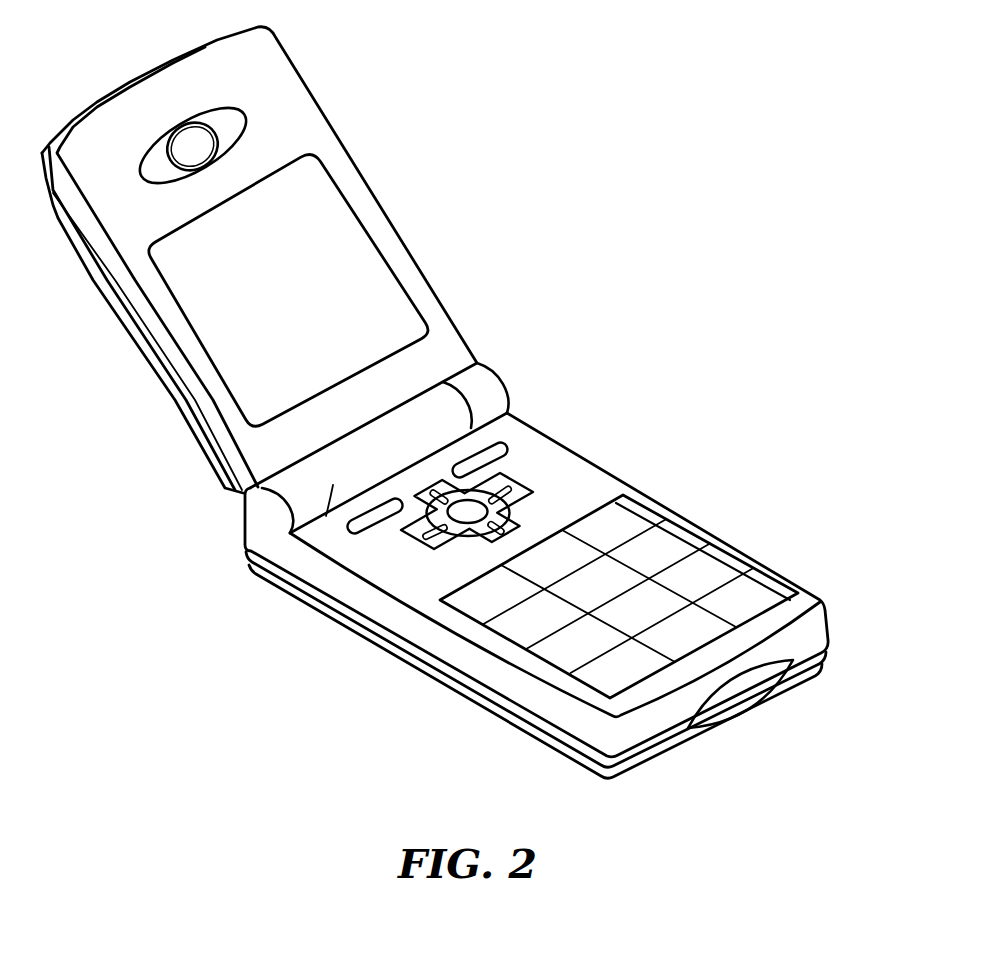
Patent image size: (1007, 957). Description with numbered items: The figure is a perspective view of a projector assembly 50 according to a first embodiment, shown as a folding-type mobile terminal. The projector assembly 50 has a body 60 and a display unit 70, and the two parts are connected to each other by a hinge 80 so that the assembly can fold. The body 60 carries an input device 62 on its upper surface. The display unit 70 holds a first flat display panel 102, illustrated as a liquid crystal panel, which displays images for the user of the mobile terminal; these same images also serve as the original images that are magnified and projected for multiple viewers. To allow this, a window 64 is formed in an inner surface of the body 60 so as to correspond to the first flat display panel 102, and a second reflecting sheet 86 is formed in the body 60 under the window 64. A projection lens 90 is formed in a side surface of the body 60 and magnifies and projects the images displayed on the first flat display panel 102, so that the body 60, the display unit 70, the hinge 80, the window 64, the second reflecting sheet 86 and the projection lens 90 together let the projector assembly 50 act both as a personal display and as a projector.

The projector assembly 50 is at (706, 160).
The body 60 is at (798, 473).
The input device 62 is at (600, 523).
The window 64 is at (735, 546).
The display unit 70 is at (430, 176).
The hinge 80 is at (318, 492).
The second reflecting sheet 86 is at (673, 543).
The projection lens 90 is at (740, 703).
The first flat display panel 102 is at (378, 280).